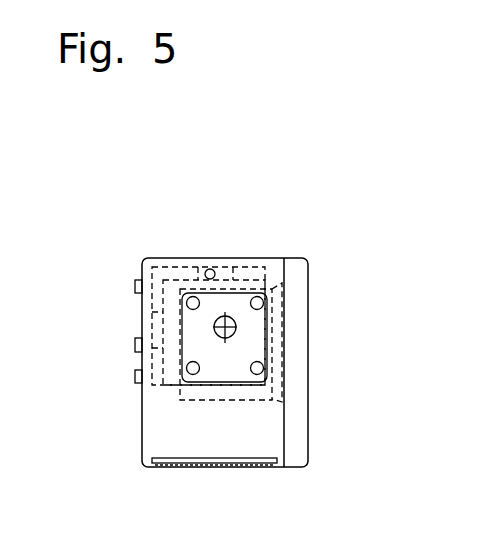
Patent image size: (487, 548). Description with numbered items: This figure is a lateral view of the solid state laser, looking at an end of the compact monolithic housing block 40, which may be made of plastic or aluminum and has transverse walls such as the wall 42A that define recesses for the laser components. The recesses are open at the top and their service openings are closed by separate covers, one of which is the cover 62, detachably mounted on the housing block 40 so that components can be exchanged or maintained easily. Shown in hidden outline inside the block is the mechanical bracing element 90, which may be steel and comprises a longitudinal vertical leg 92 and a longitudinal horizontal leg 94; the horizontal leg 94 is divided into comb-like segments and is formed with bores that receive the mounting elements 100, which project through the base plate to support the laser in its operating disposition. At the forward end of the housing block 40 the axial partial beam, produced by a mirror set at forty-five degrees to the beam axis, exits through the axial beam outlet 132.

The monolithic housing block 40 is at (157, 448).
The transverse wall 42A is at (165, 418).
The cover 62 is at (295, 380).
The mechanical bracing element 90 is at (158, 283).
The longitudinal vertical leg 92 is at (187, 273).
The longitudinal horizontal leg 94 is at (157, 383).
The mounting elements 100 is at (137, 378).
The axial beam outlet 132 is at (230, 327).